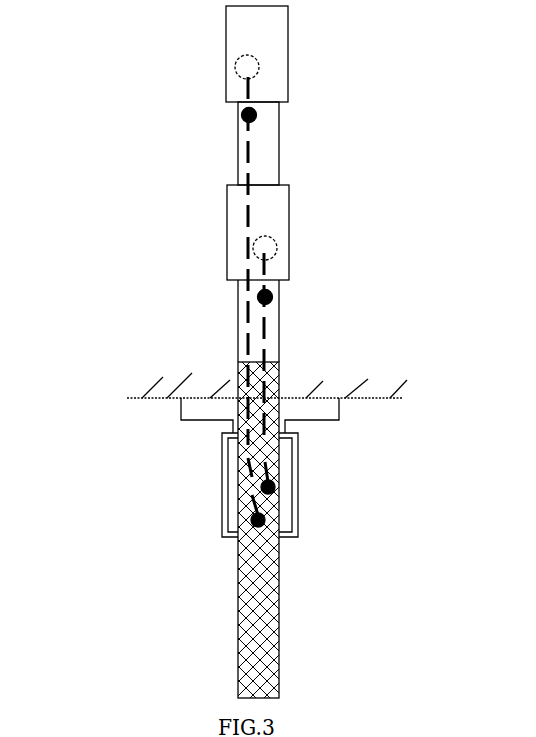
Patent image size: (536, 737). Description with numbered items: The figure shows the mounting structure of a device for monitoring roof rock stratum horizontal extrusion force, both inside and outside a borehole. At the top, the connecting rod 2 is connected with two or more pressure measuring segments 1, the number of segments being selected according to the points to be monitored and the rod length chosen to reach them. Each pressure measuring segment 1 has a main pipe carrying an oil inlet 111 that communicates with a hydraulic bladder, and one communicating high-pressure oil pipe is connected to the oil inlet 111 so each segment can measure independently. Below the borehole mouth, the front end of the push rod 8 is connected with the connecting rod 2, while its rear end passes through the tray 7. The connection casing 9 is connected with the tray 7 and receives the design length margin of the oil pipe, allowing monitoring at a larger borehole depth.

The pressure measuring segment 1 is at (233, 33).
The connecting rod 2 is at (238, 146).
The oil inlet 111 is at (277, 243).
The tray 7 is at (202, 424).
The connection casing 9 is at (222, 500).
The push rod 8 is at (238, 612).